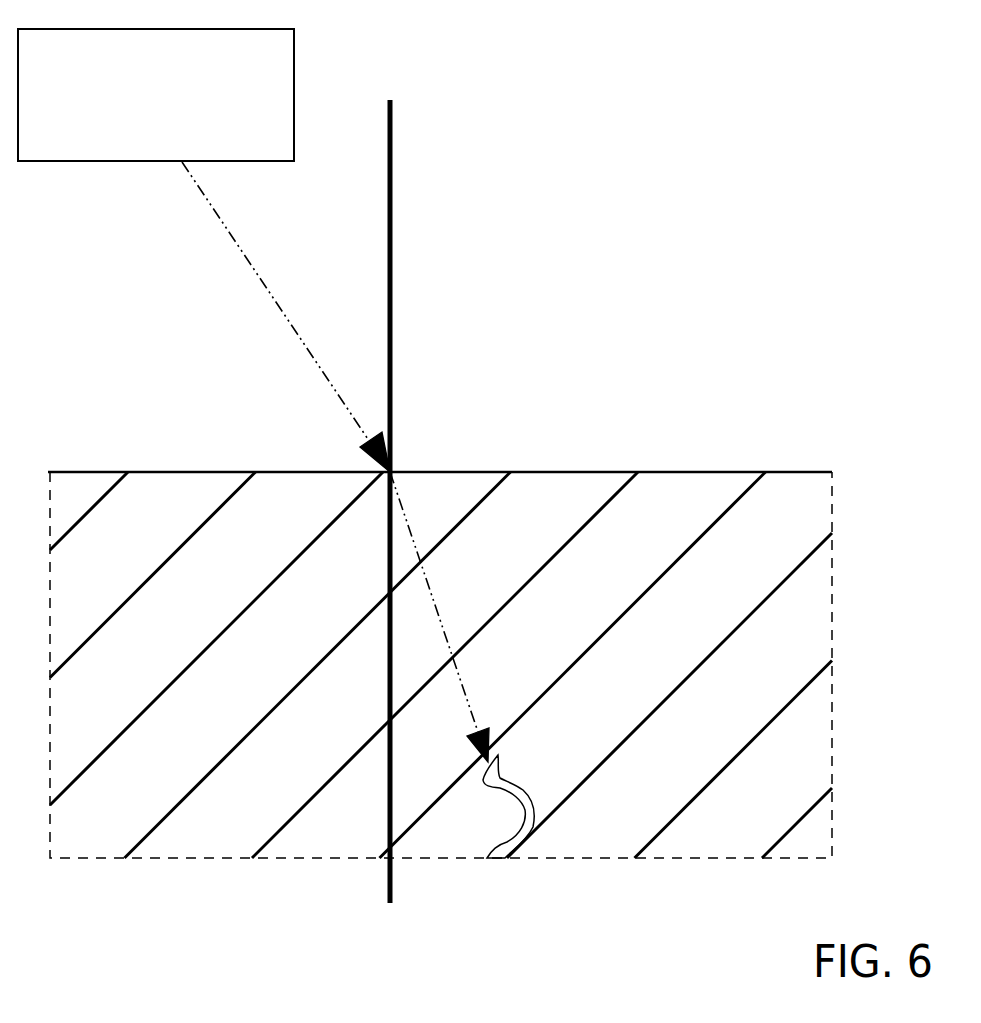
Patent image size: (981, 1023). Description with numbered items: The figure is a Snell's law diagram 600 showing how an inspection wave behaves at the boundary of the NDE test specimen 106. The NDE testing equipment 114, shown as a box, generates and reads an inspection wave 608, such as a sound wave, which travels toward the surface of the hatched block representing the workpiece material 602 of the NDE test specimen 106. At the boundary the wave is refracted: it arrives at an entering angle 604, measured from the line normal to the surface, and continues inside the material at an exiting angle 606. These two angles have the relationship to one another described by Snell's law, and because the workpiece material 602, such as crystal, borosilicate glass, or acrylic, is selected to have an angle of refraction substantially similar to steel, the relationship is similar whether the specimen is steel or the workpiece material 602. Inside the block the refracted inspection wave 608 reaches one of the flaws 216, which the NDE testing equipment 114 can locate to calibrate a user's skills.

The NDE testing equipment 114 is at (156, 95).
The NDE test specimen 106 is at (441, 665).
The workpiece material 602 is at (658, 502).
The entering angle 604 is at (240, 242).
The exiting angle 606 is at (393, 705).
The inspection wave 608 is at (197, 187).
The Snell's law diagram 600 is at (593, 233).
The flaws 216 is at (530, 837).